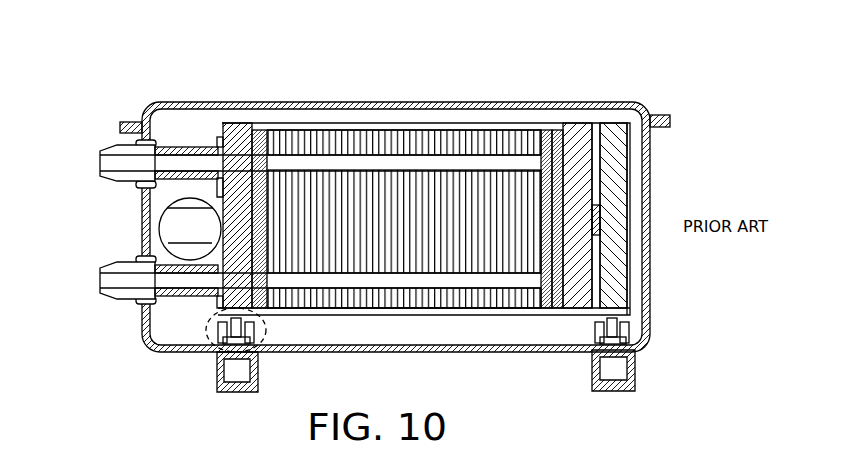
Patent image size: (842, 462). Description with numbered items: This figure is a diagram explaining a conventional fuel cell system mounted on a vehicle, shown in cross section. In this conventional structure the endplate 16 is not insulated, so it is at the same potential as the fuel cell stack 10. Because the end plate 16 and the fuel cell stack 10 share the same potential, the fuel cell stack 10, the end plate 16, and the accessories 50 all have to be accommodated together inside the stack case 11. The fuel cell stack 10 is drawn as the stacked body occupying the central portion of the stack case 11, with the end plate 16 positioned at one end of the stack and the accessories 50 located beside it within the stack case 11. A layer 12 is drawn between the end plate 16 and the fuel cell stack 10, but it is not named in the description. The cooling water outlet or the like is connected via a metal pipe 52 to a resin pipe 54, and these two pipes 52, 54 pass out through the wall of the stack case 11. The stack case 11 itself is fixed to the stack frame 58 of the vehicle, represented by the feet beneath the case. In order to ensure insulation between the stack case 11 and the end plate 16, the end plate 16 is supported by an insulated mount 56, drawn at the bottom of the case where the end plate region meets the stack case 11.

The fuel cell stack 10 is at (490, 135).
The stack case 11 is at (240, 126).
The separator plate 12 is at (262, 131).
The endplate 16 is at (233, 133).
The accessories 50 is at (192, 220).
The metal pipe 52 is at (150, 262).
The resin pipe 54 is at (130, 264).
The insulated mount 56 is at (206, 324).
The stack frame 58 is at (214, 375).